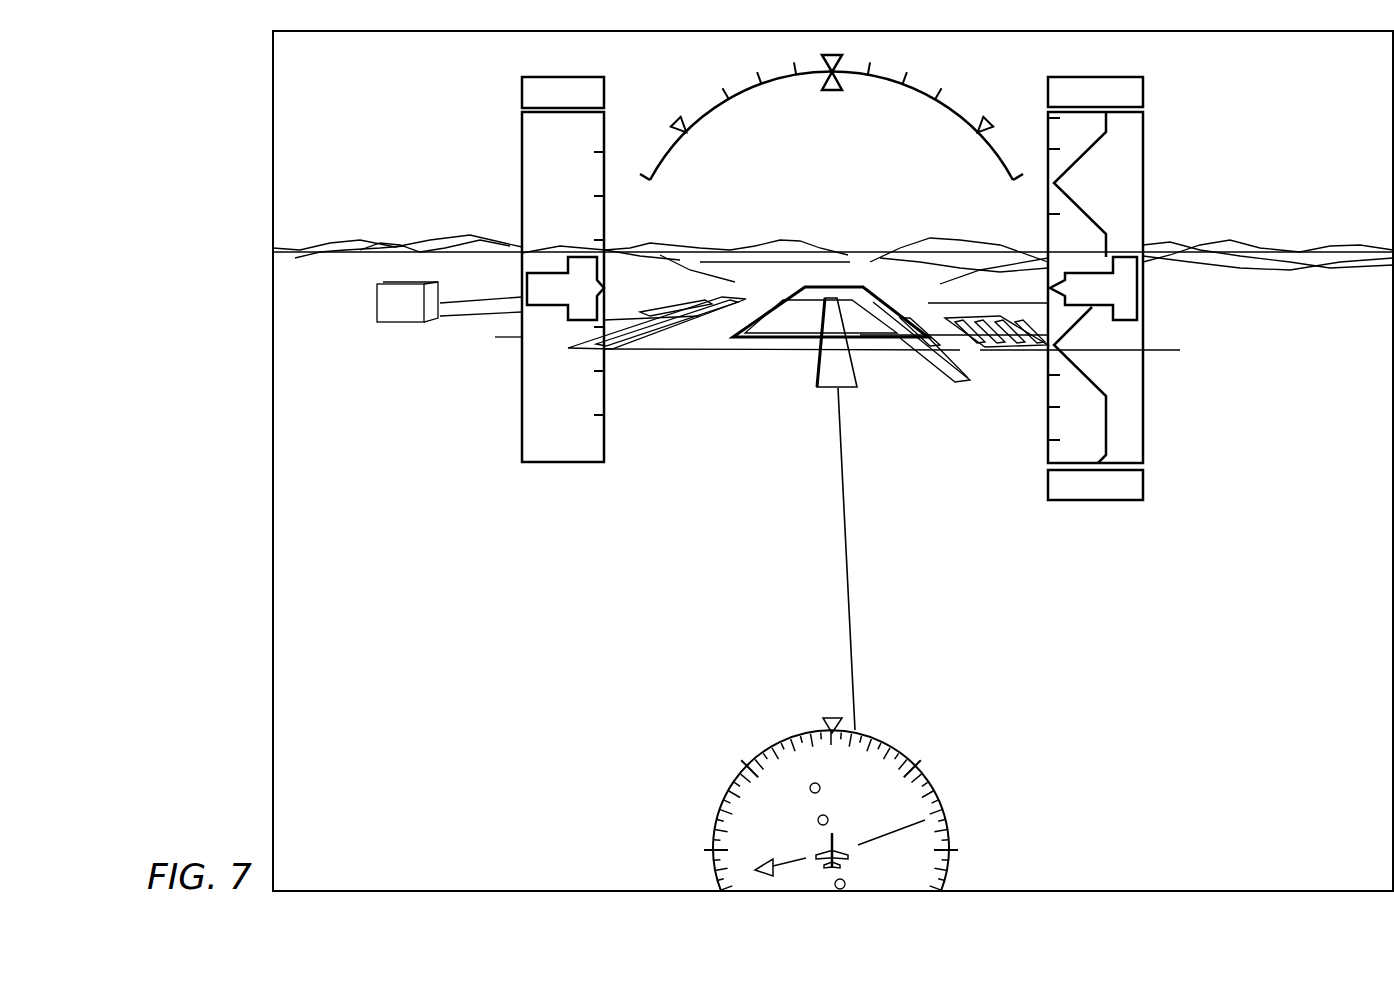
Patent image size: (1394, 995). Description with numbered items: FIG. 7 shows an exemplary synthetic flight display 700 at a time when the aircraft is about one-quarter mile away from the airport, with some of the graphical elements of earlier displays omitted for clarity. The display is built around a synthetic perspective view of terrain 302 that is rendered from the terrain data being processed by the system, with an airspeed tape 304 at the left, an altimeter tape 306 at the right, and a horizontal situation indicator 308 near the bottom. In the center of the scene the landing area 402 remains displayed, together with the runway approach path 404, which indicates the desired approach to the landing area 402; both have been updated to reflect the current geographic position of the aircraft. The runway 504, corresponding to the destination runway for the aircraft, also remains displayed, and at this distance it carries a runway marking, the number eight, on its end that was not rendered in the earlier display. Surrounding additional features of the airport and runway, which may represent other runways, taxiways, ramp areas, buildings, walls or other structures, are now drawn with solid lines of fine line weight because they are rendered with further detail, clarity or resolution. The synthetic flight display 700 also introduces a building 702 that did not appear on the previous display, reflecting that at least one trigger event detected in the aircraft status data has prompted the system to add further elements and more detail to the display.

The synthetic flight display 700 is at (205, 133).
The terrain 302 is at (356, 248).
The airspeed tape 304 is at (522, 172).
The altimeter tape 306 is at (1146, 162).
The horizontal situation indicator 308 is at (790, 736).
The landing area 402 is at (858, 285).
The runway approach path 404 is at (852, 596).
The runway 504 is at (812, 352).
The building 702 is at (398, 316).